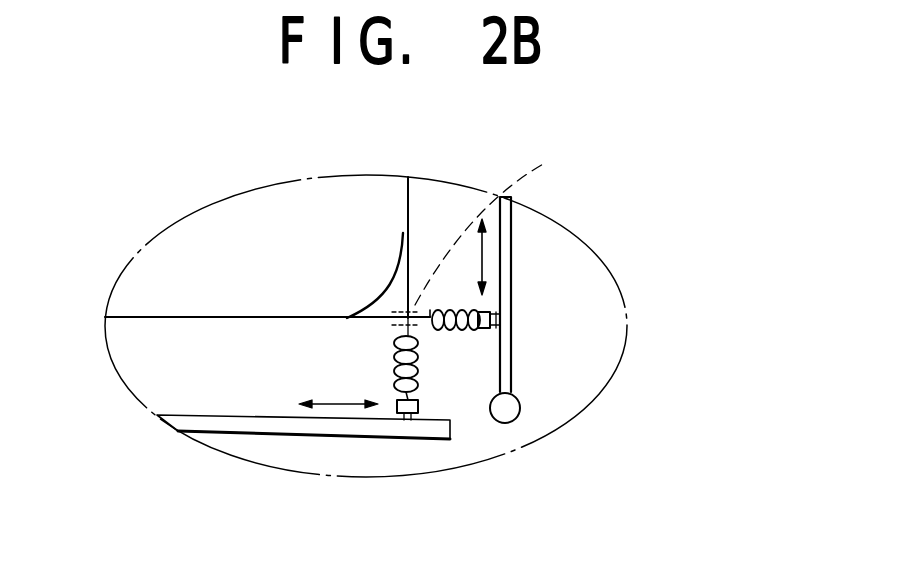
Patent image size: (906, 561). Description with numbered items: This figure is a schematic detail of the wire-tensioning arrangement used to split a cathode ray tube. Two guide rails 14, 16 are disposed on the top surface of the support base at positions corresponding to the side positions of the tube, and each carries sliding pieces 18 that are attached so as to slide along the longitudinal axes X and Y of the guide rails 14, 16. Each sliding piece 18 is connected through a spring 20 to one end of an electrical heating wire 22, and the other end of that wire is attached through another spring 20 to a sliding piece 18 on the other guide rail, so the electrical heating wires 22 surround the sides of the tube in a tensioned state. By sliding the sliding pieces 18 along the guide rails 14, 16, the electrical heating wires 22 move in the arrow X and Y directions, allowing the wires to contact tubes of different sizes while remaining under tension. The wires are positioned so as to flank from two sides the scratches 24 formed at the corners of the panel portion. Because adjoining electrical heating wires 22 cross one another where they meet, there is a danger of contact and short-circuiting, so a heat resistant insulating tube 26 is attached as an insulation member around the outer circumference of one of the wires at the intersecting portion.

The guide rail 14 is at (230, 428).
The guide rail 16 is at (508, 272).
The sliding piece 18 is at (400, 413).
The spring 20 is at (420, 377).
The electrical heating wire 22 is at (408, 254).
The scratch 24 is at (385, 252).
The heat resistant insulating tube 26 is at (492, 218).
The longitudinal axis of guide rail X is at (326, 410).
The longitudinal axis of guide rail Y is at (484, 261).